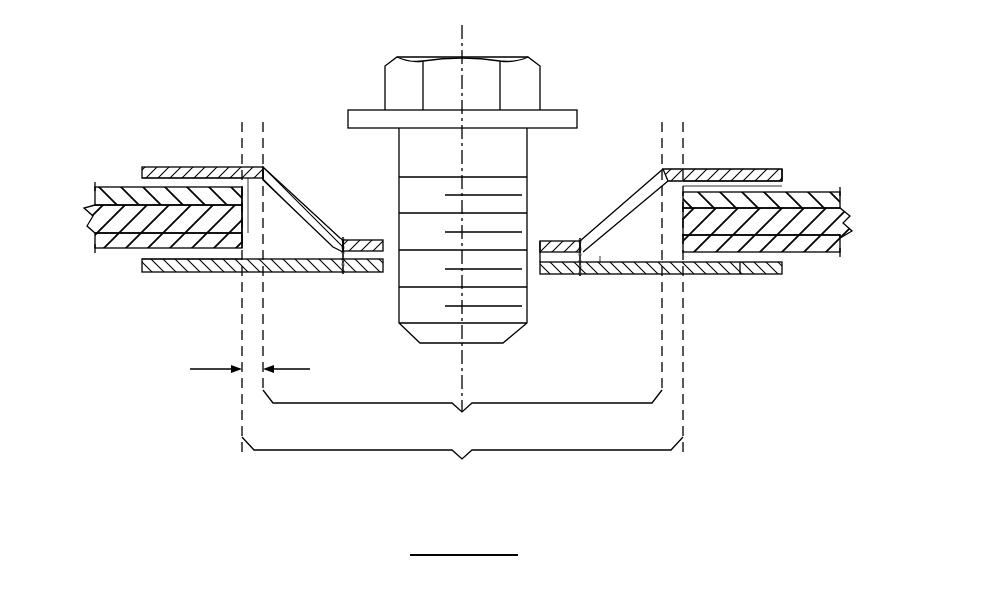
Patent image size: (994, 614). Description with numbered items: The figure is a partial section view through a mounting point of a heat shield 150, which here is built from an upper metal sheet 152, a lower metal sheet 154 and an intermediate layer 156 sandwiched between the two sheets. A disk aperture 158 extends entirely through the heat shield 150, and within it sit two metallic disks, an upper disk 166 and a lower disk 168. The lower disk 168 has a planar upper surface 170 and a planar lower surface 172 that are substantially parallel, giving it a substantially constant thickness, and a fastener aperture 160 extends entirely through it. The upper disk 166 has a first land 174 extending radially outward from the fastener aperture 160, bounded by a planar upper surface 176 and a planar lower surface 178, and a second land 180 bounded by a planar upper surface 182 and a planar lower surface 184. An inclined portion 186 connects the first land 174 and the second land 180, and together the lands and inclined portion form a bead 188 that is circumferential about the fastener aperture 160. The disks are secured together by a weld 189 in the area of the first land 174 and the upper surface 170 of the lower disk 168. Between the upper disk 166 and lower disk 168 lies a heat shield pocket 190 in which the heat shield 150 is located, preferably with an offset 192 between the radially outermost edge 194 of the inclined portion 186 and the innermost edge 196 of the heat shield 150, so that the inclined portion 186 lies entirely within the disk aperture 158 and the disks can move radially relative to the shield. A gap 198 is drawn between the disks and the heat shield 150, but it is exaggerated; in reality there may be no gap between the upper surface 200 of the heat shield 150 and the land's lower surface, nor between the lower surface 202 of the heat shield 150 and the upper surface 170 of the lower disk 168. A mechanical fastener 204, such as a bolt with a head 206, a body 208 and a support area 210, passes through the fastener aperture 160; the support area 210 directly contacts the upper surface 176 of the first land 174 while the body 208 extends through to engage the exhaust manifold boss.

The heat shield 150 is at (60, 205).
The upper metal sheet 152 is at (95, 187).
The lower metal sheet 154 is at (93, 248).
The intermediate layer 156 is at (91, 220).
The disk aperture 158 is at (252, 200).
The fastener aperture 160 is at (388, 244).
The upper disk 166 is at (170, 167).
The lower disk 168 is at (204, 272).
The upper surface of lower disk 170 is at (740, 262).
The lower surface of lower disk 172 is at (707, 276).
The first land 174 is at (558, 241).
The upper surface of first land 176 is at (543, 241).
The lower surface of first land 178 is at (547, 274).
The second land 180 is at (760, 170).
The upper surface of second land 182 is at (780, 181).
The lower surface of second land 184 is at (783, 184).
The inclined portion 186 is at (626, 207).
The bead 188 is at (291, 172).
The weld 189 is at (582, 268).
The heat shield pocket 190 is at (628, 247).
The offset 192 is at (265, 369).
The radially outermost edge of inclined portion 194 is at (292, 191).
The innermost edge of heat shield 196 is at (241, 238).
The gap 198 is at (133, 186).
The upper surface of heat shield 200 is at (824, 191).
The lower surface of heat shield 202 is at (802, 253).
The mechanical fastener 204 is at (447, 57).
The head 206 is at (478, 70).
The body 208 is at (496, 323).
The support area 210 is at (560, 118).